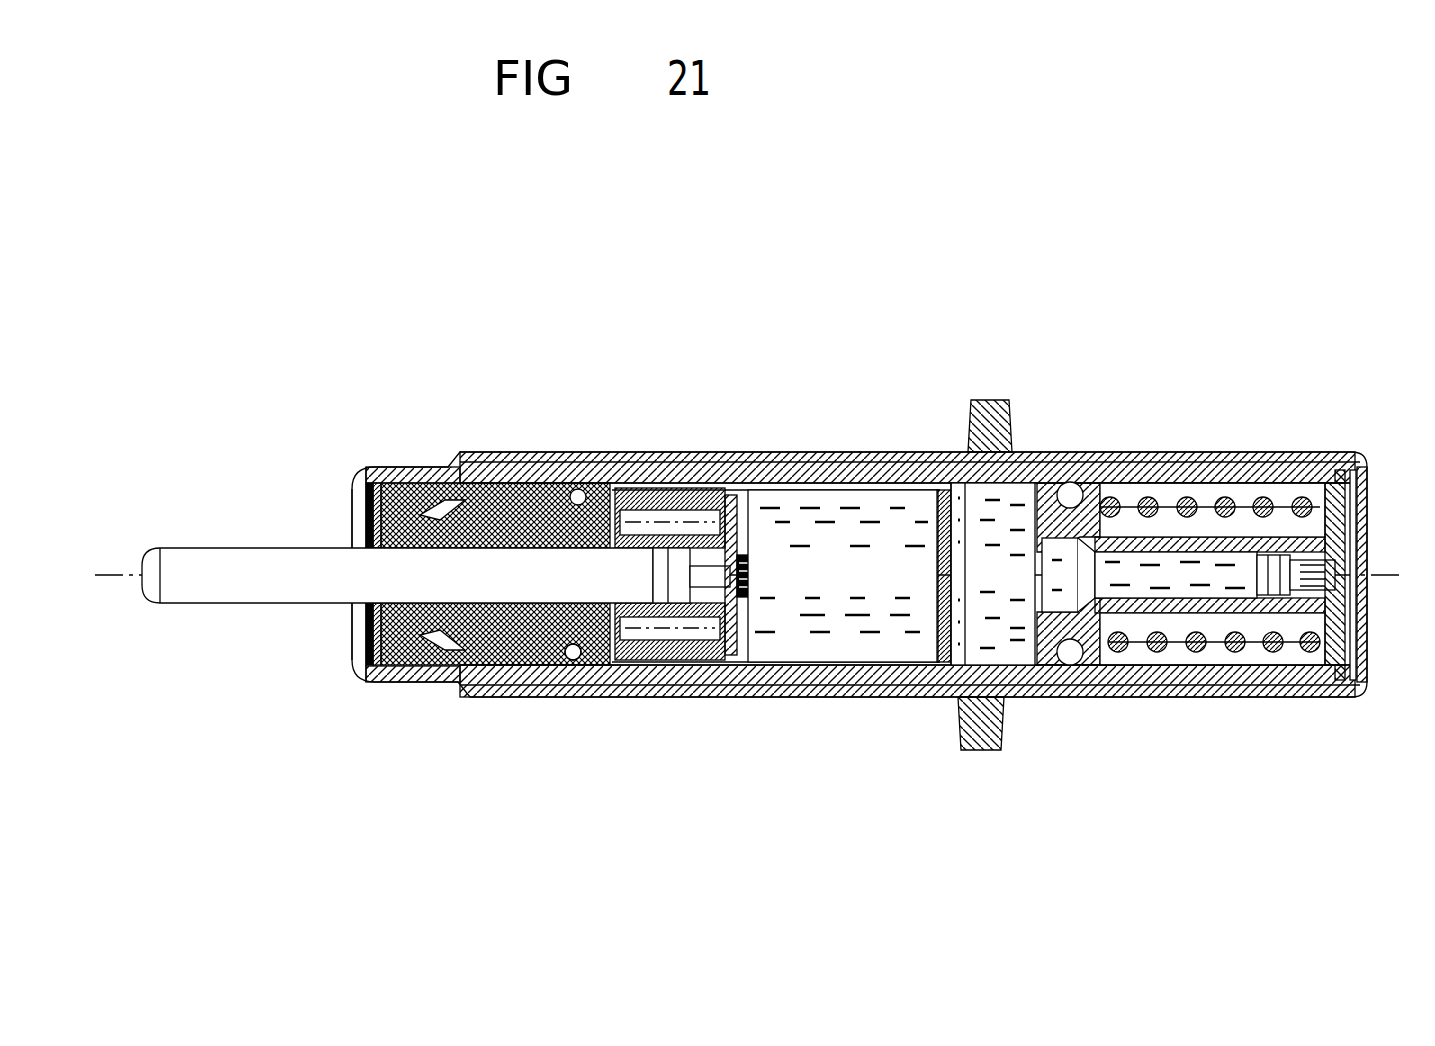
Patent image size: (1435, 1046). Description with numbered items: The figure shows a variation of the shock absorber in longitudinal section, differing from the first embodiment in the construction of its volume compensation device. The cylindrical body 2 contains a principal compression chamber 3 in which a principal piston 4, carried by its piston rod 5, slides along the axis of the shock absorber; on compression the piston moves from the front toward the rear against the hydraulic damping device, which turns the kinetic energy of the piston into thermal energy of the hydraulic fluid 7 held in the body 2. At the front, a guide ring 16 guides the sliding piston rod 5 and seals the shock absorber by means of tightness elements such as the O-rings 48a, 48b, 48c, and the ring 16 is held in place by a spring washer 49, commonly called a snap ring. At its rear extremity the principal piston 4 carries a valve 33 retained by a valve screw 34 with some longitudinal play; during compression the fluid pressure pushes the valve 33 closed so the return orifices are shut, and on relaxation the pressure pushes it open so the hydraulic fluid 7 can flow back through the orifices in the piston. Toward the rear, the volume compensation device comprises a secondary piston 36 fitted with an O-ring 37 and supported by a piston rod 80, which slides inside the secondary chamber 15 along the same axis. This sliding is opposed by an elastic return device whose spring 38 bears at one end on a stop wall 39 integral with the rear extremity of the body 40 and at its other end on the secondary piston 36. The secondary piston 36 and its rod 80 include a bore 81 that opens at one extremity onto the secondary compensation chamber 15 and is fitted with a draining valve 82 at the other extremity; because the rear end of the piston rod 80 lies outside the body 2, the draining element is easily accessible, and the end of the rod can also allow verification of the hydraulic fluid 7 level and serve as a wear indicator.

The body 2 is at (428, 460).
The principal compression chamber 3 is at (820, 453).
The principal piston 4 is at (690, 500).
The piston rod 5 is at (200, 562).
The hydraulic fluid 7 is at (886, 626).
The secondary chamber 15 is at (1016, 624).
The guide ring 16 is at (464, 487).
The valve 33 is at (730, 560).
The valve screw 34 is at (749, 553).
The secondary piston 36 is at (1100, 500).
The O-ring 37 is at (1070, 490).
The spring 38 is at (1147, 497).
The stop wall 39 is at (1318, 452).
The body 40 is at (1353, 452).
The O-ring 48a is at (575, 698).
The O-ring 48b is at (394, 684).
The O-ring 48c is at (422, 684).
The spring washer 49 is at (375, 462).
The piston rod 80 is at (1215, 612).
The bore 81 is at (1160, 583).
The draining valve 82 is at (1288, 453).